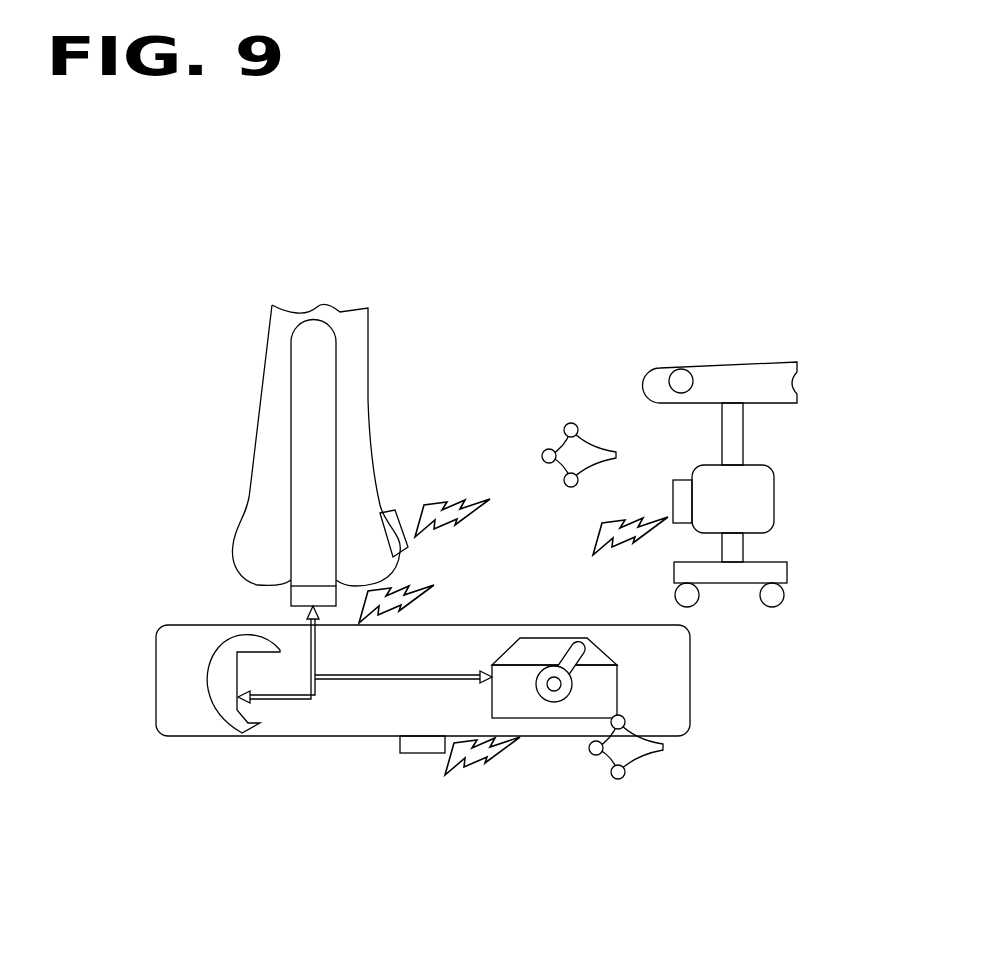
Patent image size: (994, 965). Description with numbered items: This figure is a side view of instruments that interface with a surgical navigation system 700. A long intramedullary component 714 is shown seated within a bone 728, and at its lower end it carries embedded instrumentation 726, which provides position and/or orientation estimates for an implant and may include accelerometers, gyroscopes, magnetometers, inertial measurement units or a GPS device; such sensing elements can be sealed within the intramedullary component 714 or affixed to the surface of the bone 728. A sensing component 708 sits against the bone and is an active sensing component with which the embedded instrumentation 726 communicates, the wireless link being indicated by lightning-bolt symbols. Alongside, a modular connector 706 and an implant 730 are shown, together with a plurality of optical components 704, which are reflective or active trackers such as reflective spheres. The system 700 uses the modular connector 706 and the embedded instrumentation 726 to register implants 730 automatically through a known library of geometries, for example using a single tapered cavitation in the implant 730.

The surgical navigation system 700 is at (731, 362).
The optical components 704 is at (620, 778).
The modular connector 706 is at (603, 664).
The sensing component 708 is at (408, 547).
The intramedullary component 714 is at (335, 361).
The embedded instrumentation 726 is at (290, 600).
The bone 728 is at (358, 468).
The implant 730 is at (226, 730).